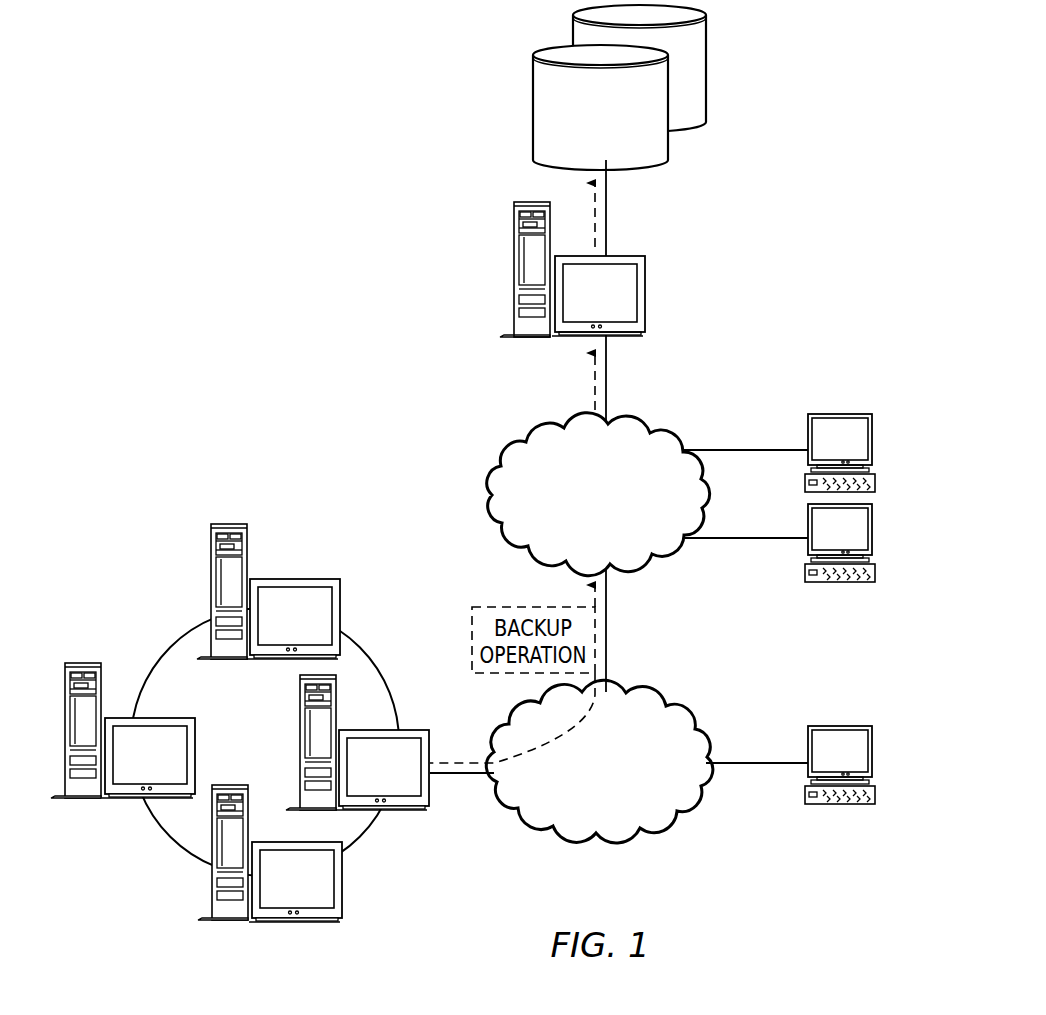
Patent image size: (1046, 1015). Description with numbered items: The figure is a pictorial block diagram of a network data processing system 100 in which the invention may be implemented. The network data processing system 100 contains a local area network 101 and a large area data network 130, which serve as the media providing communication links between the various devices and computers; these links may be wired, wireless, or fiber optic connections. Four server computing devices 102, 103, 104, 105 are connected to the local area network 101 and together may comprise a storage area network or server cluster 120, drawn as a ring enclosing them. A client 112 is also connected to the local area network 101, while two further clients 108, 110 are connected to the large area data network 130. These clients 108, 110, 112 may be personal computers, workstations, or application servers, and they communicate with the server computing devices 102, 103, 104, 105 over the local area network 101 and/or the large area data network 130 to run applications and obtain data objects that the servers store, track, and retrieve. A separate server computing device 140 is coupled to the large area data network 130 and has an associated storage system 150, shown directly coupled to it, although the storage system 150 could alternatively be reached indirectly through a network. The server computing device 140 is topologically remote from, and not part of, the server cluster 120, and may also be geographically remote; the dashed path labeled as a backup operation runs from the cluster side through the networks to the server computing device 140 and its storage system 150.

The network data processing system 100 is at (394, 138).
The local area network 101 is at (650, 829).
The server computing device 102 is at (401, 813).
The server computing device 103 is at (290, 578).
The server computing device 104 is at (108, 800).
The server computing device 105 is at (253, 923).
The client 108 is at (872, 536).
The client 110 is at (872, 445).
The client 112 is at (872, 762).
The server cluster 120 is at (172, 642).
The large area data network 130 is at (530, 437).
The server computing device 140 is at (514, 248).
The storage system 150 is at (533, 92).